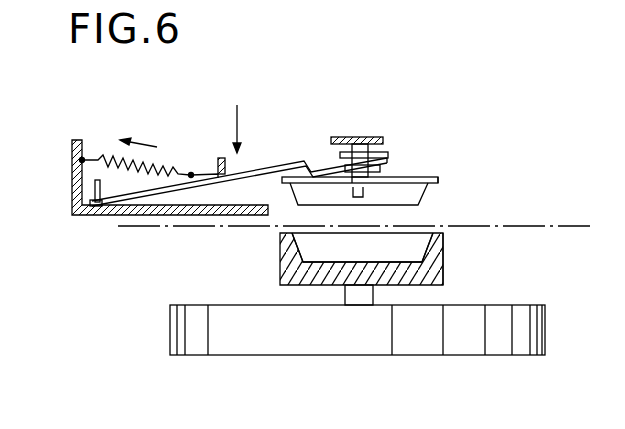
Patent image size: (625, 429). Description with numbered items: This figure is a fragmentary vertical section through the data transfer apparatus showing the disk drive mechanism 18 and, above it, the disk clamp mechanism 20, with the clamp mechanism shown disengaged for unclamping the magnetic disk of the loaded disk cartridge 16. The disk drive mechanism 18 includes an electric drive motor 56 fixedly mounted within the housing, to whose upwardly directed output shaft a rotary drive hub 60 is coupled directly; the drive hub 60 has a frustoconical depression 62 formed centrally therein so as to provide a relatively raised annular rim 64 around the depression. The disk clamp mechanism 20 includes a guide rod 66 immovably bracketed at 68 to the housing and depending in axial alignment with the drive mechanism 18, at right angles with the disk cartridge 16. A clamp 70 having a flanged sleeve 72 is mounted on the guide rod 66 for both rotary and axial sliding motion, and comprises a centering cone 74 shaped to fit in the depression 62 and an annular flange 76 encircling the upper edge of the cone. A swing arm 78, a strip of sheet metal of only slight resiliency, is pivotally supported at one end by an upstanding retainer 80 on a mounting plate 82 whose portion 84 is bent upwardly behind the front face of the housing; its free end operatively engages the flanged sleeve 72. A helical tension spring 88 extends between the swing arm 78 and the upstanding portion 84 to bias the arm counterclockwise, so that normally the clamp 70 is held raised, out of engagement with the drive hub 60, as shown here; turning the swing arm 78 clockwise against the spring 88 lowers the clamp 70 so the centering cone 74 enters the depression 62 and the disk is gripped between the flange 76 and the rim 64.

The disk cartridge 16 is at (498, 226).
The disk drive mechanism 18 is at (346, 363).
The disk clamp mechanism 20 is at (398, 126).
The electric drive motor 56 is at (542, 333).
The rotary drive hub 60 is at (290, 274).
The frustoconical depression 62 is at (298, 239).
The annular rim 64 is at (445, 233).
The guide rod 66 is at (347, 162).
The bracket 68 is at (357, 137).
The clamp 70 is at (435, 170).
The flanged sleeve 72 is at (390, 160).
The centering cone 74 is at (417, 197).
The annular flange 76 is at (437, 186).
The swing arm 78 is at (260, 168).
The upstanding retainer 80 is at (95, 189).
The mounting plate 82 is at (98, 207).
The upstanding portion 84 is at (72, 148).
The helical tension spring 88 is at (163, 170).